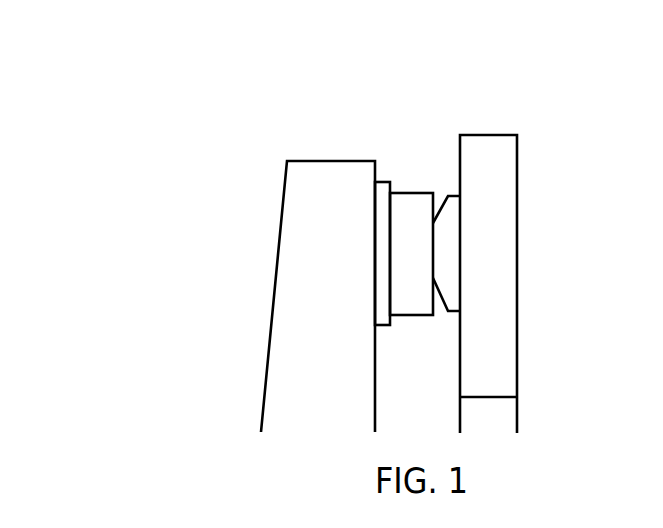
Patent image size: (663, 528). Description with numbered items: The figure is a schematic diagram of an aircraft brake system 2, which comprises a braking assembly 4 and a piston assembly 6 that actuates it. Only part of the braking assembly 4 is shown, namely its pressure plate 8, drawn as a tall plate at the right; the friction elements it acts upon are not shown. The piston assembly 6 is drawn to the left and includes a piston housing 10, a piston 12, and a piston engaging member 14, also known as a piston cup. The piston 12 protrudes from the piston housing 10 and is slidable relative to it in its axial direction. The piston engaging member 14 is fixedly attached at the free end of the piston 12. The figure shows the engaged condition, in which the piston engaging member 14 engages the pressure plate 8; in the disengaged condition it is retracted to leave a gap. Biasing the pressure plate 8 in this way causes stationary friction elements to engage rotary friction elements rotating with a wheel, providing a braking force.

The aircraft brake system 2 is at (110, 112).
The braking assembly 4 is at (483, 94).
The piston assembly 6 is at (306, 100).
The pressure plate 8 is at (502, 190).
The piston housing 10 is at (310, 168).
The piston 12 is at (405, 197).
The piston engaging member 14 is at (444, 218).